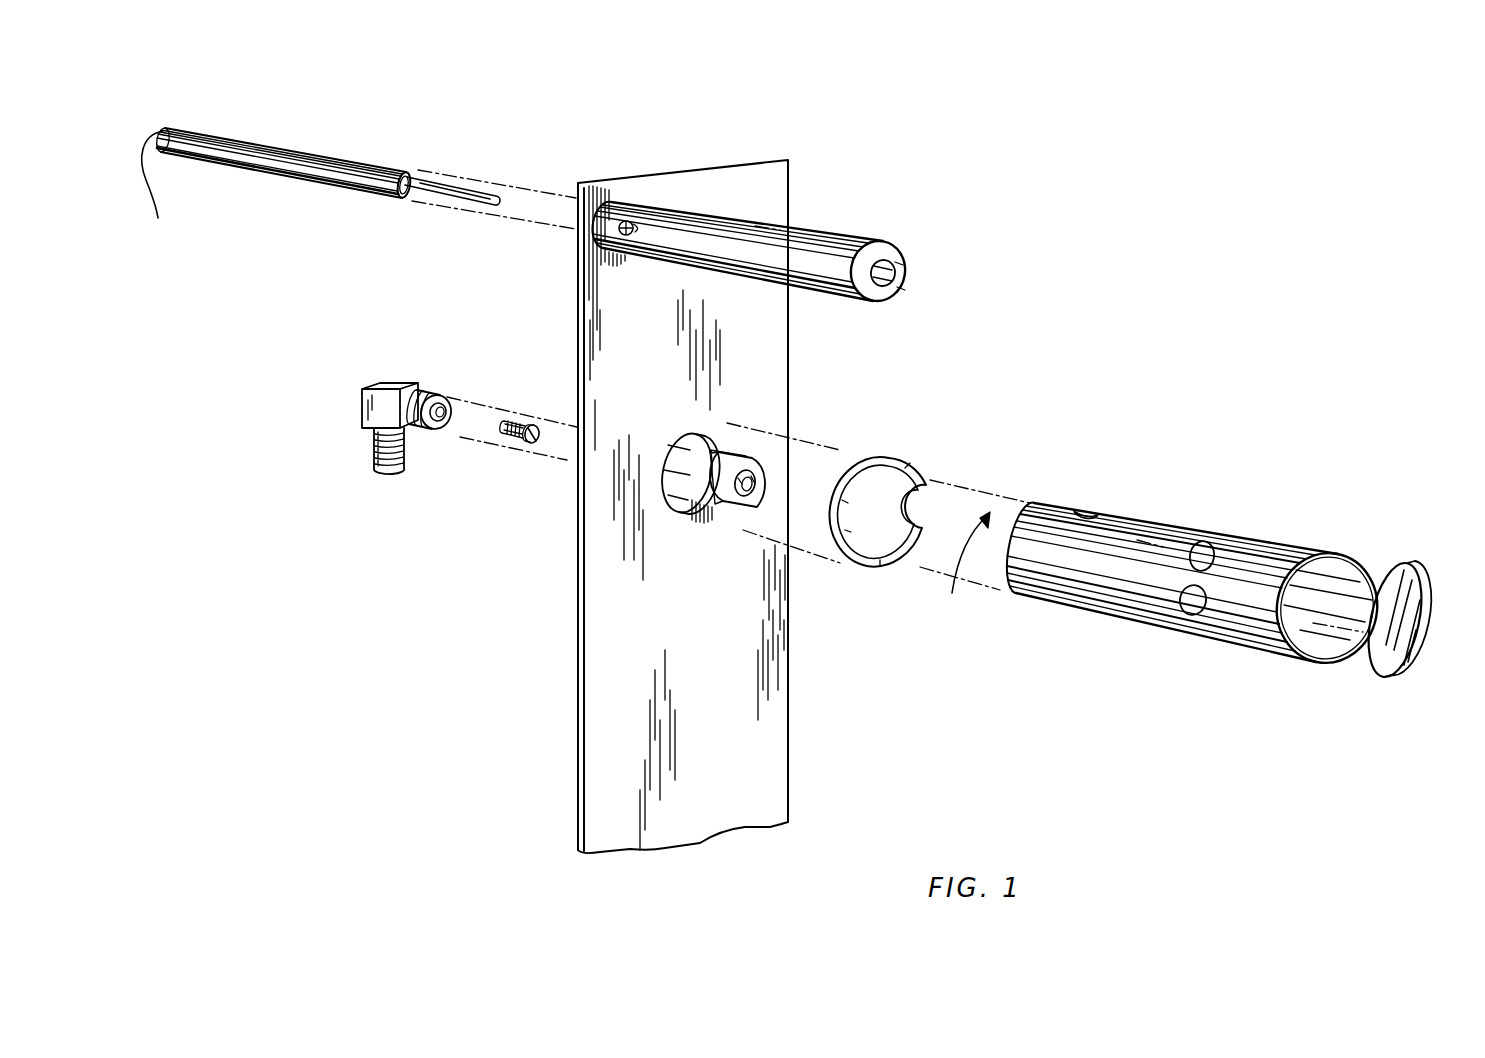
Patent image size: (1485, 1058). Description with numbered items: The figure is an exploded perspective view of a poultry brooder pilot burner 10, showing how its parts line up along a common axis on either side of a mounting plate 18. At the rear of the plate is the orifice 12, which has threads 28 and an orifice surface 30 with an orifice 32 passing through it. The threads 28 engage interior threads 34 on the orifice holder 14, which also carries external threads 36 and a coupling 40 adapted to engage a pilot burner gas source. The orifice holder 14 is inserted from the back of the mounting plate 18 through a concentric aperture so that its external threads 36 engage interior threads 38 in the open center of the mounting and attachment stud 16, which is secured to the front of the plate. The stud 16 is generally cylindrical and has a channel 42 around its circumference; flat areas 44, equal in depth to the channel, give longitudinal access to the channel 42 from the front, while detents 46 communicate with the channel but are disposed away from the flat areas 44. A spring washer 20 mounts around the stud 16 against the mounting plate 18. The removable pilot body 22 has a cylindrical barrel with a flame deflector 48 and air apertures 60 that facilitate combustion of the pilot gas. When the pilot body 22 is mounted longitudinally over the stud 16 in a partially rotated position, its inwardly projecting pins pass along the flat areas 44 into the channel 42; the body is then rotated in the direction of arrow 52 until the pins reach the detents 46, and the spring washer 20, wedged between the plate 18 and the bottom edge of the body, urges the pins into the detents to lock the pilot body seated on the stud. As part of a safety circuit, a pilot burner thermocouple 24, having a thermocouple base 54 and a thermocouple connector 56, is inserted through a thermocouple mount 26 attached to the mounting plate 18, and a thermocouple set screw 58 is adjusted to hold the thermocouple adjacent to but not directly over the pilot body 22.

The poultry brooder pilot burner 10 is at (934, 392).
The orifice 12 is at (527, 441).
The orifice holder 14 is at (393, 389).
The mounting and attachment stud 16 is at (730, 491).
The mounting plate 18 is at (598, 780).
The spring washer 20 is at (870, 563).
The removable pilot body 22 is at (1140, 606).
The pilot burner thermocouple 24 is at (455, 187).
The thermocouple mount 26 is at (838, 242).
The orifice threads 28 is at (505, 424).
The orifice surface 30 is at (535, 446).
The orifice 32 is at (532, 436).
The interior threads 34 is at (444, 411).
The external threads 36 is at (425, 398).
The interior threads 38 is at (756, 481).
The coupling 40 is at (382, 449).
The channel 42 is at (693, 447).
The flat areas 44 is at (743, 447).
The detents 46 is at (683, 508).
The flame deflector 48 is at (1418, 598).
The arrow 52 is at (960, 573).
The thermocouple base 54 is at (285, 150).
The thermocouple connector 56 is at (168, 196).
The thermocouple set screw 58 is at (627, 232).
The air apertures 60 is at (1093, 515).